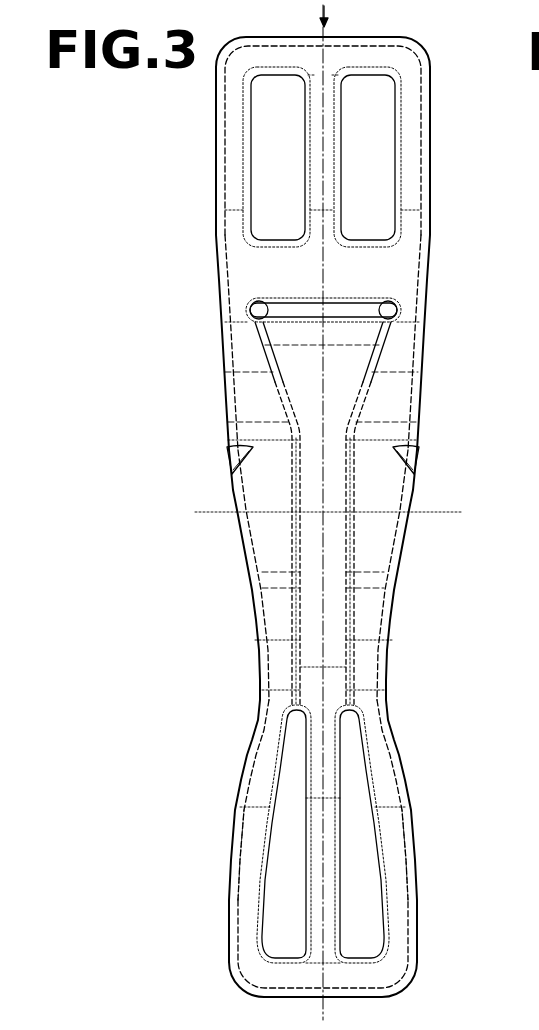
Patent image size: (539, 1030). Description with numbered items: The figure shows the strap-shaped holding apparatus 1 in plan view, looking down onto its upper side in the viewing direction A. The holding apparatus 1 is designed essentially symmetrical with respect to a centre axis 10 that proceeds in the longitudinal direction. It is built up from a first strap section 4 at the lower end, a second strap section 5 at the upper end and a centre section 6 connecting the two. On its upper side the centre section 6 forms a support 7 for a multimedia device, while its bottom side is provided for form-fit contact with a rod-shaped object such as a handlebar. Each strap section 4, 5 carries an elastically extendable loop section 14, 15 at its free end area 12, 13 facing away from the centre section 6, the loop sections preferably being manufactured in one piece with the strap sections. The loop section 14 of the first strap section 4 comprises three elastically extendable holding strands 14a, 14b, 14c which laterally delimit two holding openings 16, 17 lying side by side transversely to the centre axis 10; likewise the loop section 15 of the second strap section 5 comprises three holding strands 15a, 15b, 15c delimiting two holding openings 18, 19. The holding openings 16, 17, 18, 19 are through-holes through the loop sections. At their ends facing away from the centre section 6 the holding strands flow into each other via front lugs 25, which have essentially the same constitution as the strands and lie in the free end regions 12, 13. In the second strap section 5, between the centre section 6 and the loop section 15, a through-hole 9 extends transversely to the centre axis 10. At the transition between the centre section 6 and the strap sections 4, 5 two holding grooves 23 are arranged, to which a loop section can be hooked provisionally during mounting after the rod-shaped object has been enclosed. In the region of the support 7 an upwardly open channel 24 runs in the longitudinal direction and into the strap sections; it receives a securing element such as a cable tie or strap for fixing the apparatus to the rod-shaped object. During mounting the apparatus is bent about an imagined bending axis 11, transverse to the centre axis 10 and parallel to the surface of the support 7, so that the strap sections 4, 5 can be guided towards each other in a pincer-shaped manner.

The holding apparatus 1 is at (105, 278).
The first strap section 4 is at (452, 718).
The second strap section 5 is at (458, 338).
The centre section 6 is at (193, 528).
The support 7 is at (281, 543).
The through-hole 9 is at (283, 325).
The centre axis 10 is at (328, 1013).
The bending axis 11 is at (447, 512).
The free end area 12 is at (425, 980).
The free end area 13 is at (431, 48).
The loop section 14 is at (218, 848).
The holding strand 14a is at (246, 868).
The holding strand 14b is at (398, 868).
The holding strand 14c is at (325, 905).
The loop section 15 is at (185, 180).
The holding strand 15a is at (228, 165).
The holding strand 15b is at (410, 160).
The holding strand 15c is at (318, 130).
The holding opening 16 is at (275, 920).
The holding opening 17 is at (362, 834).
The holding opening 18 is at (270, 170).
The holding opening 19 is at (371, 172).
The holding groove 23 is at (238, 460).
The channel 24 is at (318, 592).
The front lug 25 is at (375, 53).
The viewing direction A is at (335, 19).